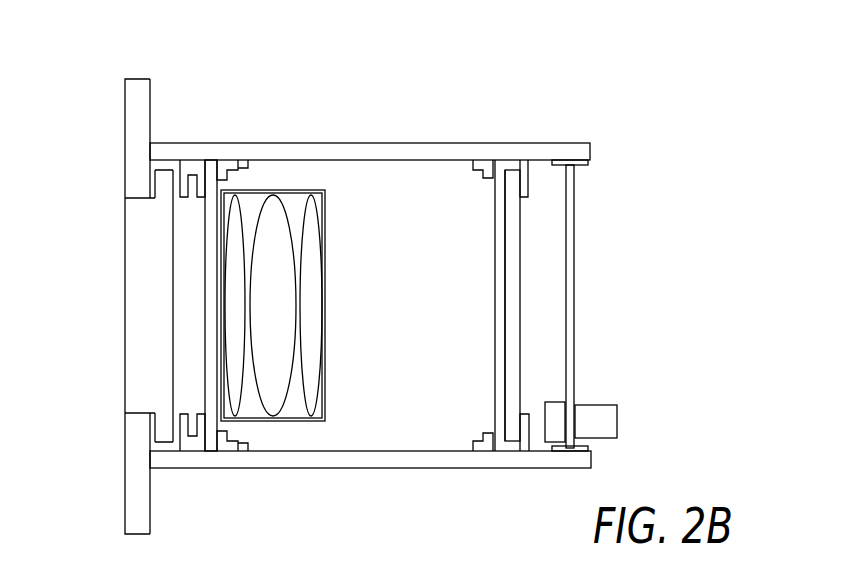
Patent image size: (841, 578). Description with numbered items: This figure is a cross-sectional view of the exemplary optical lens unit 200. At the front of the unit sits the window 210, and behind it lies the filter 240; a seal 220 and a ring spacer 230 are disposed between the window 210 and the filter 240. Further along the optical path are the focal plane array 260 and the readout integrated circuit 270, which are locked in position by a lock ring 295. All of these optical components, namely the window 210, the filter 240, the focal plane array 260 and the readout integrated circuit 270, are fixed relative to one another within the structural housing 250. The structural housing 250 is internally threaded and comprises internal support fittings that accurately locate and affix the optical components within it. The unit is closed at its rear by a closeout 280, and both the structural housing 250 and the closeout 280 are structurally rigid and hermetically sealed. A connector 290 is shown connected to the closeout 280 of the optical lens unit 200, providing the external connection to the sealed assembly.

The optical lens unit 200 is at (245, 80).
The window 210 is at (158, 288).
The seal 220 is at (153, 428).
The ring spacer 230 is at (223, 448).
The filter 240 is at (208, 223).
The structural housing 250 is at (400, 143).
The focal plane array 260 is at (500, 175).
The readout integrated circuit (ROIC) 270 is at (510, 207).
The closeout 280 is at (573, 308).
The connector 290 is at (605, 405).
The lock ring 295 is at (472, 448).